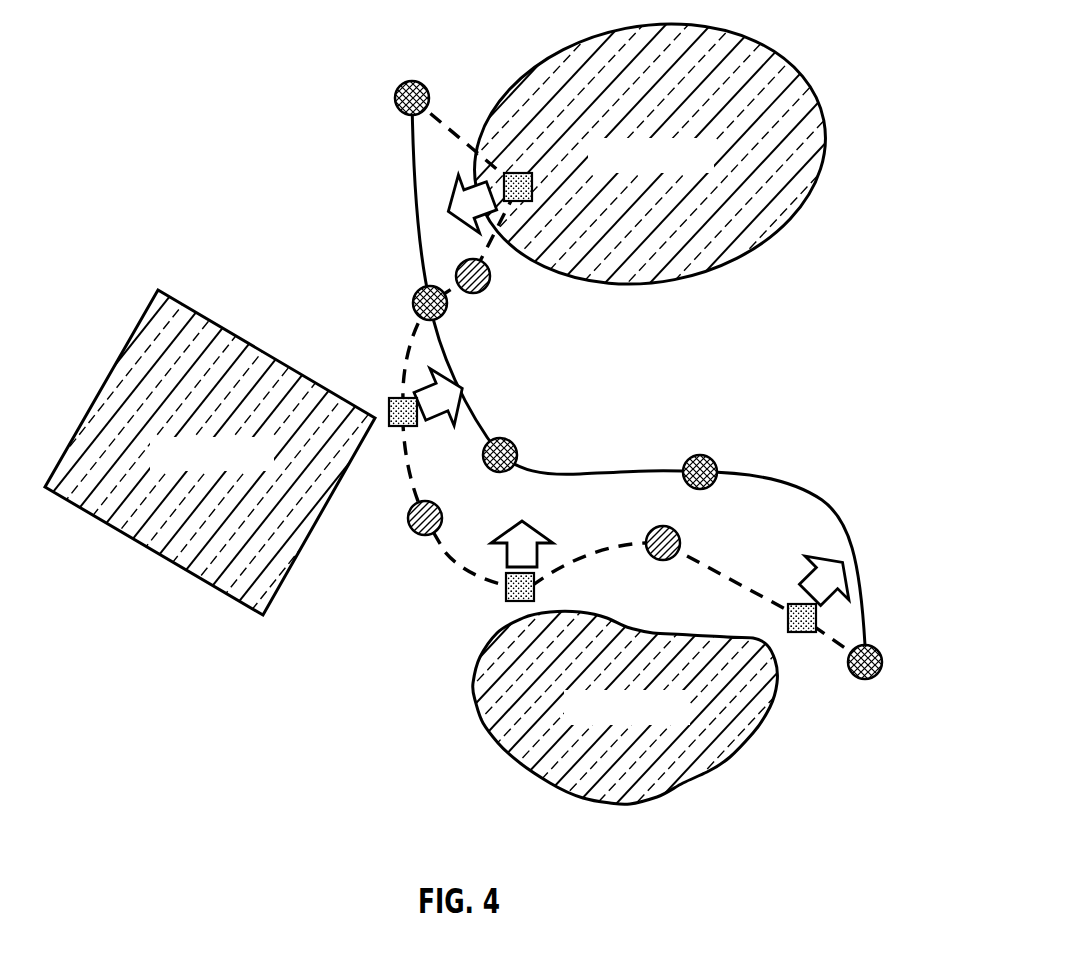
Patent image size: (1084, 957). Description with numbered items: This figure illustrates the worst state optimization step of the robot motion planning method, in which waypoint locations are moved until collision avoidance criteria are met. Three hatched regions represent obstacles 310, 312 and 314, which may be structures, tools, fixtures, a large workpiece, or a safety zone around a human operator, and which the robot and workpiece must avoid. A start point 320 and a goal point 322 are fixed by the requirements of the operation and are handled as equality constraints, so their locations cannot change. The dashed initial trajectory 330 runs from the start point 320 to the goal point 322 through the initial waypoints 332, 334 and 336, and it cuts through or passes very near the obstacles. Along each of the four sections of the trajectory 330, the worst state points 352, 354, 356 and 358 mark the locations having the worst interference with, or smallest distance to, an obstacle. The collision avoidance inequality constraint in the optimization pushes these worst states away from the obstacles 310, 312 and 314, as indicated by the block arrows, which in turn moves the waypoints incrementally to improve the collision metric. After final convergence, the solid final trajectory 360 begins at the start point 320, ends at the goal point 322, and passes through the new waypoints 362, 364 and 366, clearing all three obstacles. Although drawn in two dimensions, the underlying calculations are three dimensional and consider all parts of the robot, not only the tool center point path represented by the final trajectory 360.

The obstacle 310 is at (797, 70).
The obstacle 312 is at (153, 546).
The obstacle 314 is at (713, 770).
The start point 320 is at (395, 100).
The goal point 322 is at (878, 648).
The trajectory 330 is at (445, 553).
The waypoint 332 is at (491, 278).
The waypoint 334 is at (413, 532).
The waypoint 336 is at (663, 561).
The worst state point 352 is at (532, 193).
The worst state point 354 is at (396, 399).
The worst state point 356 is at (506, 598).
The worst state point 358 is at (802, 632).
The final trajectory 360 is at (588, 473).
The new waypoint 362 is at (416, 291).
The new waypoint 364 is at (500, 438).
The new waypoint 366 is at (709, 457).